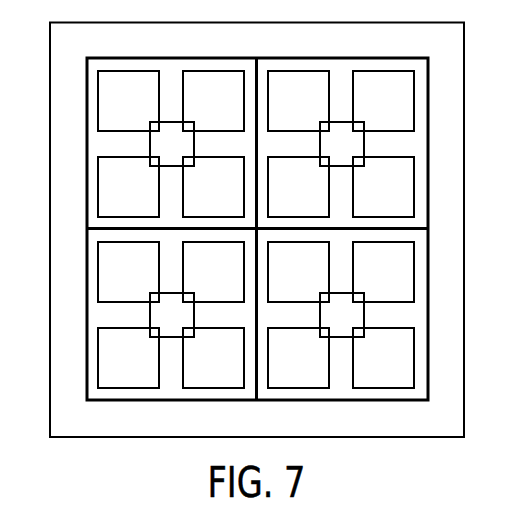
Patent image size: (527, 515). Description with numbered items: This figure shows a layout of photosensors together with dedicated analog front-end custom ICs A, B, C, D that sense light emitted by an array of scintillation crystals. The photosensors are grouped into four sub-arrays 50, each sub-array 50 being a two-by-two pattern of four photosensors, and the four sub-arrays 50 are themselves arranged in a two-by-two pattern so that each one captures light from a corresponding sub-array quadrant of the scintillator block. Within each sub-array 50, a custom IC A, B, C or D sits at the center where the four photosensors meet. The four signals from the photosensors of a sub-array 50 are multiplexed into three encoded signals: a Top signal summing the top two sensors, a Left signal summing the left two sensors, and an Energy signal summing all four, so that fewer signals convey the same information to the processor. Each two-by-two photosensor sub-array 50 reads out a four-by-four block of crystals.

The sub-array 50 is at (255, 229).
The analog front-end custom IC A is at (172, 144).
The analog front-end custom IC B is at (342, 144).
The analog front-end custom IC C is at (172, 315).
The analog front-end custom IC D is at (342, 315).